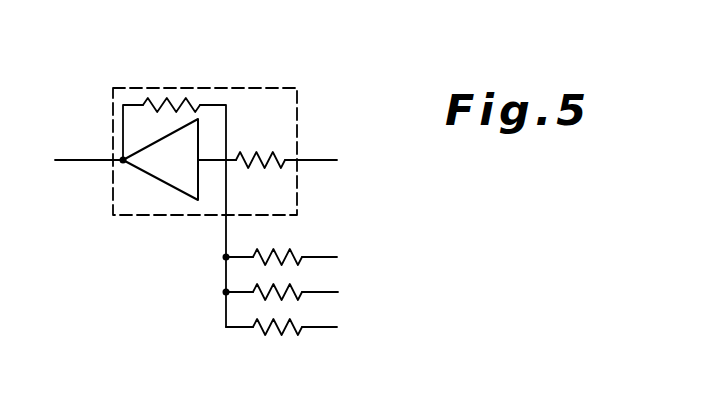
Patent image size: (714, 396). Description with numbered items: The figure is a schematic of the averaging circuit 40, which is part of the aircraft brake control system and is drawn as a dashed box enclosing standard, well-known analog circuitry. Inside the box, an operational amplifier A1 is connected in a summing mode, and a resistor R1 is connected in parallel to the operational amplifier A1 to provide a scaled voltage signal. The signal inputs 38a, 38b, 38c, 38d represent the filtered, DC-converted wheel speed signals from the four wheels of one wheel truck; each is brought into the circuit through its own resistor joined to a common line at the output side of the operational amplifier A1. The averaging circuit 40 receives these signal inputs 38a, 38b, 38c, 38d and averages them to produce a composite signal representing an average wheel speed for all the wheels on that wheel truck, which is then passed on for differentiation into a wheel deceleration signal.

The averaging circuit 40 is at (279, 88).
The operational amplifier A1 is at (168, 184).
The resistor R1 is at (171, 101).
The signal input 38a is at (315, 161).
The signal input 38b is at (330, 256).
The signal input 38c is at (331, 291).
The signal input 38d is at (333, 326).